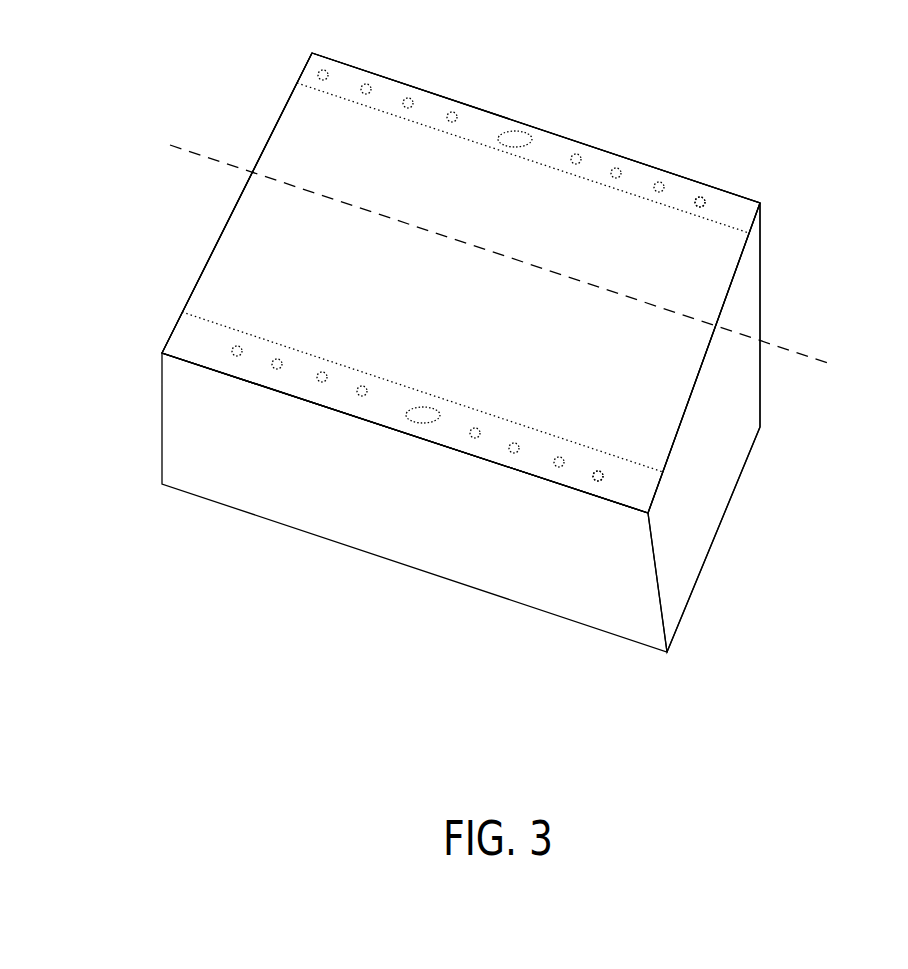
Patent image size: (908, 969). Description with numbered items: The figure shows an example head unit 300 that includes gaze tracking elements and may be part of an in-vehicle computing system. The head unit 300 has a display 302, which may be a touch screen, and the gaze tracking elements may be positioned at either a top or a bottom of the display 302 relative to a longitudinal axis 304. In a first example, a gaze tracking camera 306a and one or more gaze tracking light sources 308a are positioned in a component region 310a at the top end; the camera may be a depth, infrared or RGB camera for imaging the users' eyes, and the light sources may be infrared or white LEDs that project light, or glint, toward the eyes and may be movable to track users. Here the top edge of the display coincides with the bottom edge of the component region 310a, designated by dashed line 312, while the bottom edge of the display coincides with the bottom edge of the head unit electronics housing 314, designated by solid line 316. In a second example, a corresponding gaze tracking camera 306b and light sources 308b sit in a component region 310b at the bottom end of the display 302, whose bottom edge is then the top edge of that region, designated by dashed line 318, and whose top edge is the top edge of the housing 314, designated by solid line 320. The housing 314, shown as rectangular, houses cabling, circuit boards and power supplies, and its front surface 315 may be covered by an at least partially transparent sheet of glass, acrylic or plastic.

The head unit 300 is at (680, 60).
The display 302 is at (263, 144).
The longitudinal axis 304 is at (805, 358).
The gaze tracking camera 306a is at (533, 123).
The gaze tracking camera 306b is at (415, 434).
The gaze tracking light sources 308a is at (718, 186).
The gaze tracking light sources 308b is at (593, 494).
The component region 310a is at (653, 161).
The component region 310b is at (484, 459).
The dashed line 312 is at (558, 172).
The head unit electronics housing 314 is at (764, 298).
The front surface 315 is at (210, 225).
The solid line 316 is at (310, 402).
The dashed line 318 is at (498, 420).
The solid line 320 is at (413, 85).